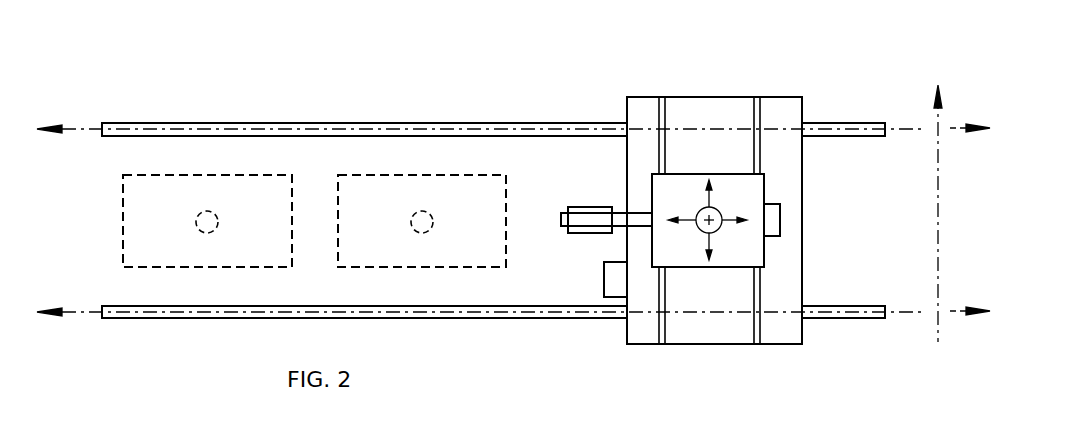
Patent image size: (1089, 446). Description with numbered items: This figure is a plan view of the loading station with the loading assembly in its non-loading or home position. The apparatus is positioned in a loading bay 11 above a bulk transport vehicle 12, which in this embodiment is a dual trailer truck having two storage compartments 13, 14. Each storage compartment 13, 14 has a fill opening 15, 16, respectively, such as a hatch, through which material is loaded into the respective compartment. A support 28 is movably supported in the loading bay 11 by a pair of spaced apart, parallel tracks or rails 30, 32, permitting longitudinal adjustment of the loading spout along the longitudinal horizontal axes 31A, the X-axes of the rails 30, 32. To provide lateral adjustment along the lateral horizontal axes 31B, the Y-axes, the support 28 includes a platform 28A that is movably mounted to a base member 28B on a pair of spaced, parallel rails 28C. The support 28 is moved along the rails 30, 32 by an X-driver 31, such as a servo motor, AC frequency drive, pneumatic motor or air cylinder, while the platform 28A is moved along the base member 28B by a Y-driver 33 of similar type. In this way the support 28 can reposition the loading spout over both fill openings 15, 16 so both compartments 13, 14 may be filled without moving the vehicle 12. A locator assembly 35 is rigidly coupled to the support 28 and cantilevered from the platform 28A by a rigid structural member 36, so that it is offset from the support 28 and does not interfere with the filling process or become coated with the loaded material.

The loading bay 11 is at (115, 88).
The bulk transport vehicle 12 is at (96, 230).
The storage compartment 13 is at (152, 175).
The storage compartment 14 is at (367, 175).
The fill opening 15 is at (214, 213).
The fill opening 16 is at (429, 213).
The support 28 is at (828, 213).
The platform 28A is at (678, 180).
The base member 28B is at (790, 284).
The rails 28C is at (667, 110).
The rail 30 is at (823, 127).
The X-driver 31 is at (603, 280).
The longitudinal horizontal axes 31A is at (950, 130).
The lateral horizontal axes 31B is at (940, 115).
The rail 32 is at (830, 315).
The Y-driver 33 is at (780, 225).
The locator assembly 35 is at (552, 245).
The rigid structural member 36 is at (622, 214).